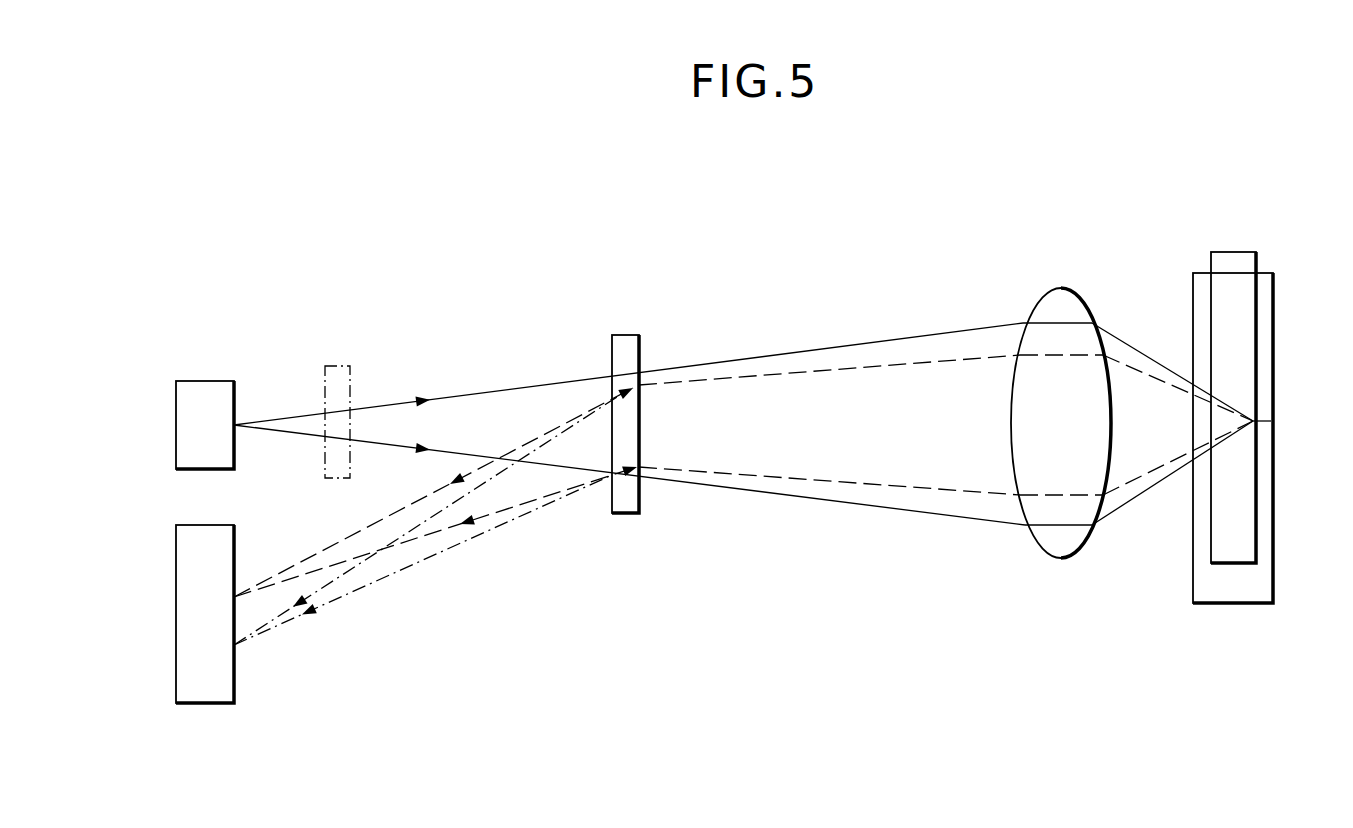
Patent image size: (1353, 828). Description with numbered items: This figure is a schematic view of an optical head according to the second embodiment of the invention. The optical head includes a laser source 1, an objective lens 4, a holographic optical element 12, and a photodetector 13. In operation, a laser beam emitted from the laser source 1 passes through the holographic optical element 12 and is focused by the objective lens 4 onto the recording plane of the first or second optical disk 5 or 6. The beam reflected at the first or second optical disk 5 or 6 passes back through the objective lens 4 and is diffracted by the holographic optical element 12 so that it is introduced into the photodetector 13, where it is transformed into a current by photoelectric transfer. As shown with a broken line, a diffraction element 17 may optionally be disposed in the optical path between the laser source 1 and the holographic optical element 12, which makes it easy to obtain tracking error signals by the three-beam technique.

The laser source 1 is at (207, 397).
The diffraction element 17 is at (332, 365).
The photodetector 13 is at (205, 690).
The holographic optical element 12 is at (627, 513).
The objective lens 4 is at (1057, 303).
The first optical disk 5 is at (1253, 260).
The second optical disk 6 is at (1265, 567).